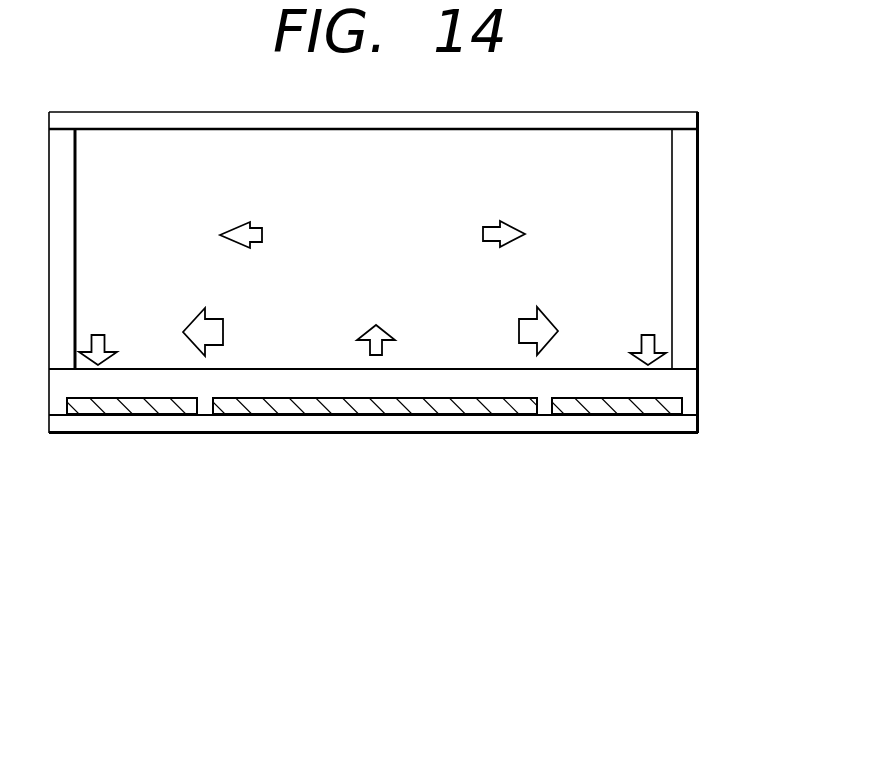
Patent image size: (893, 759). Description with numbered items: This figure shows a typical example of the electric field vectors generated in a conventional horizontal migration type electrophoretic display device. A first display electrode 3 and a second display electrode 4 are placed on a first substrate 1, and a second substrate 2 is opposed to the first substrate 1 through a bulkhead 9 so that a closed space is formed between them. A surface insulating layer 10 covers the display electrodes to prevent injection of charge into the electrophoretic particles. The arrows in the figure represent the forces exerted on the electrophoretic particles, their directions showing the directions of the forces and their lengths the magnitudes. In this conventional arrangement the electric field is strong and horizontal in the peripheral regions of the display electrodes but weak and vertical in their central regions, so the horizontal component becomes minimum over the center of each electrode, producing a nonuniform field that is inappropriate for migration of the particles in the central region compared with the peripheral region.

The first substrate 1 is at (665, 423).
The second substrate 2 is at (625, 118).
The first display electrode 3 is at (663, 408).
The second display electrode 4 is at (333, 412).
The bulkhead 9 is at (683, 241).
The surface insulating layer 10 is at (587, 378).